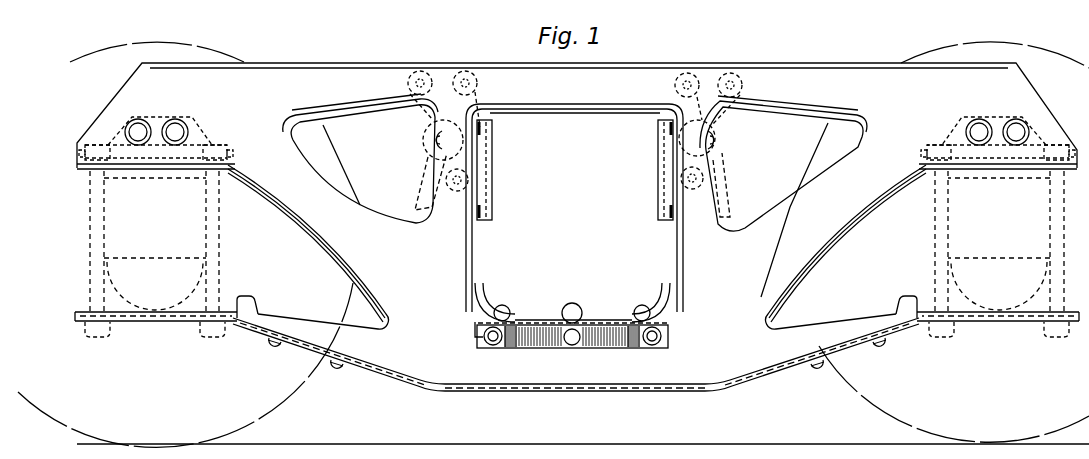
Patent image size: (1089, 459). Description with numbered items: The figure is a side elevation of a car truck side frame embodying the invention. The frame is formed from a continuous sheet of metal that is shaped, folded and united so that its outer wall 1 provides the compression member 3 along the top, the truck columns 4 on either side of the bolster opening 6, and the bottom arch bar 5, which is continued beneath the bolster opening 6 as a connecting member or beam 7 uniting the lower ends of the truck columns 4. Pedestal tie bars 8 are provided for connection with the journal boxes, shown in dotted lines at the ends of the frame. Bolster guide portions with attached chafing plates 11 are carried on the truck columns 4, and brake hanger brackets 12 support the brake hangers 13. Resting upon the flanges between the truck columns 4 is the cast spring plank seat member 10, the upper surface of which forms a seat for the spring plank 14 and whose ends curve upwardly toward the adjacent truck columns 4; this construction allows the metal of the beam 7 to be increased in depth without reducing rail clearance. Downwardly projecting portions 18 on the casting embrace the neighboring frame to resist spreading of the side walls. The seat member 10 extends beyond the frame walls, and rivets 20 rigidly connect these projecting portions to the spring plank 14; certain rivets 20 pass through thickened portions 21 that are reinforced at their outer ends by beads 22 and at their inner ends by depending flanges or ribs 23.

The outer wall 1 is at (369, 73).
The compression member 3 is at (626, 101).
The truck columns 4 is at (466, 233).
The bottom arch bar 5 is at (320, 238).
The bolster opening 6 is at (574, 212).
The connecting member or beam 7 is at (573, 389).
The pedestal tie bars 8 is at (292, 346).
The spring plank seat member 10 is at (600, 334).
The chafing plates 11 is at (493, 186).
The brake hanger brackets 12 is at (408, 93).
The brake hangers 13 is at (418, 181).
The spring plank 14 is at (542, 322).
The downwardly projecting portions 18 is at (543, 347).
The rivets 20 is at (504, 306).
The thickened portions 21 is at (477, 338).
The beads 22 is at (674, 327).
The depending flanges or ribs 23 is at (509, 346).